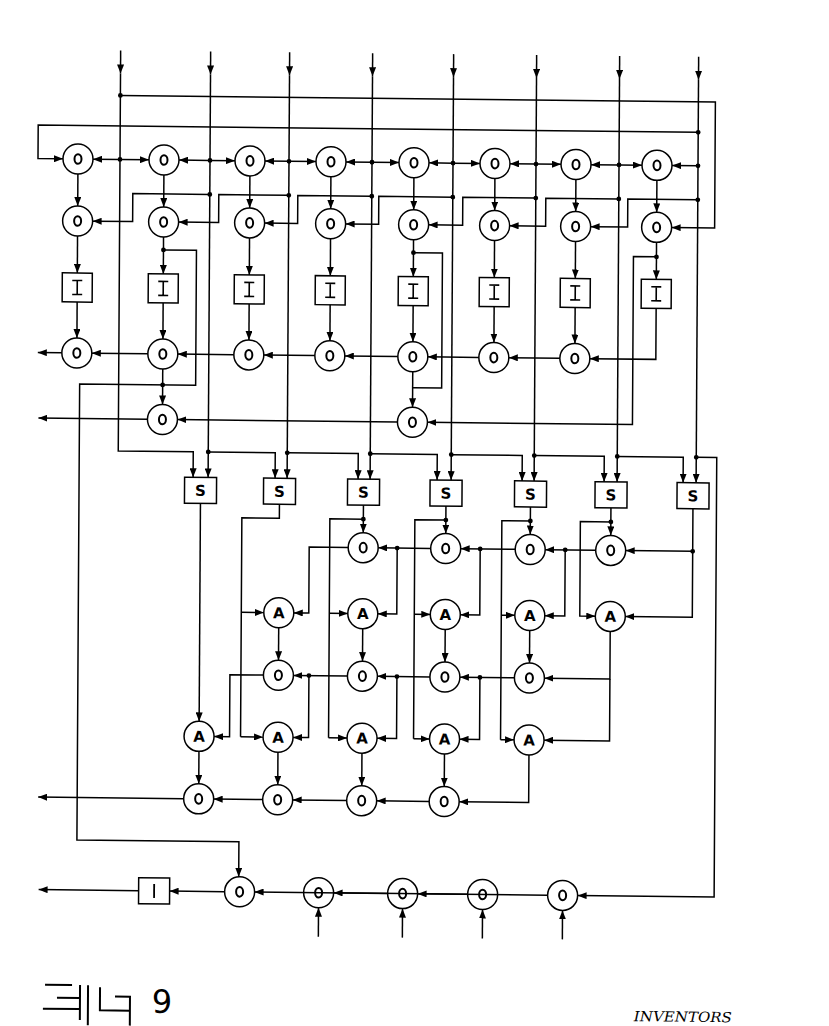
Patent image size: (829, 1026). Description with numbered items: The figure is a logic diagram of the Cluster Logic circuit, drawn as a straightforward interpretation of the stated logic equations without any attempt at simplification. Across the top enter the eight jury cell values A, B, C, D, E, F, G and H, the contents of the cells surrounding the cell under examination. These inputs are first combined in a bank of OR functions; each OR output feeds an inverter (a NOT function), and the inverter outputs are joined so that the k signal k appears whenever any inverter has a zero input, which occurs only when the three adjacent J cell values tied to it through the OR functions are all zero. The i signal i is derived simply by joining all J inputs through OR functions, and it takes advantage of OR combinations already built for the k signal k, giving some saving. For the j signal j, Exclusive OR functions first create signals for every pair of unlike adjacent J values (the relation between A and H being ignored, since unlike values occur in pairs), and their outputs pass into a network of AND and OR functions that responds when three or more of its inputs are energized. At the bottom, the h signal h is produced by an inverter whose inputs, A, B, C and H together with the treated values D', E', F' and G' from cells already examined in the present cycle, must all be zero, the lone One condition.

The J cell position A is at (154, 252).
The J cell position B is at (239, 253).
The J cell position C is at (321, 254).
The J cell position D is at (402, 255).
The J cell position E is at (485, 256).
The J cell position F is at (568, 256).
The J cell position G is at (648, 257).
The J cell position H is at (649, 464).
The k signal k is at (38, 352).
The i signal i is at (82, 418).
The j signal j is at (102, 796).
The h signal h is at (79, 889).
The treated J cell value D' is at (320, 935).
The treated J cell value E' is at (403, 936).
The treated J cell value F' is at (483, 936).
The treated J cell value G' is at (565, 938).